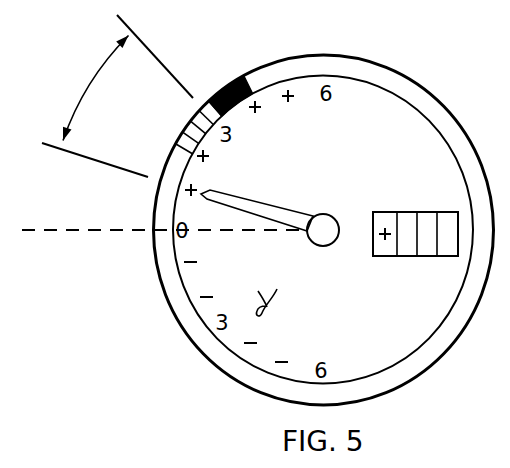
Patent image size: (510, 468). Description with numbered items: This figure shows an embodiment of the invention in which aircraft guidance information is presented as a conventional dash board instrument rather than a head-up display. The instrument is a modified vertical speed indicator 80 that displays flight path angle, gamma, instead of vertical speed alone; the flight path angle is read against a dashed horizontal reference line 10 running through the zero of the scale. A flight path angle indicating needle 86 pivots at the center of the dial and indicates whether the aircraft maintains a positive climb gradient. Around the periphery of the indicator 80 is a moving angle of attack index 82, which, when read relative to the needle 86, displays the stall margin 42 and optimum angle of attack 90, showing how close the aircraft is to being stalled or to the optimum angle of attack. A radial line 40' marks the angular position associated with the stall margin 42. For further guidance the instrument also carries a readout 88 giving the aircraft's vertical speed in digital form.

The horizontal coordinate 10 is at (164, 213).
The angular position line 40' is at (170, 56).
The stall margin 42 is at (95, 107).
The indicator 80 is at (418, 391).
The angle of attack index 82 is at (403, 88).
The flight path angle indicating needle 86 is at (250, 205).
The vertical speed readout 88 is at (414, 257).
The optimum angle of attack 90 is at (180, 115).